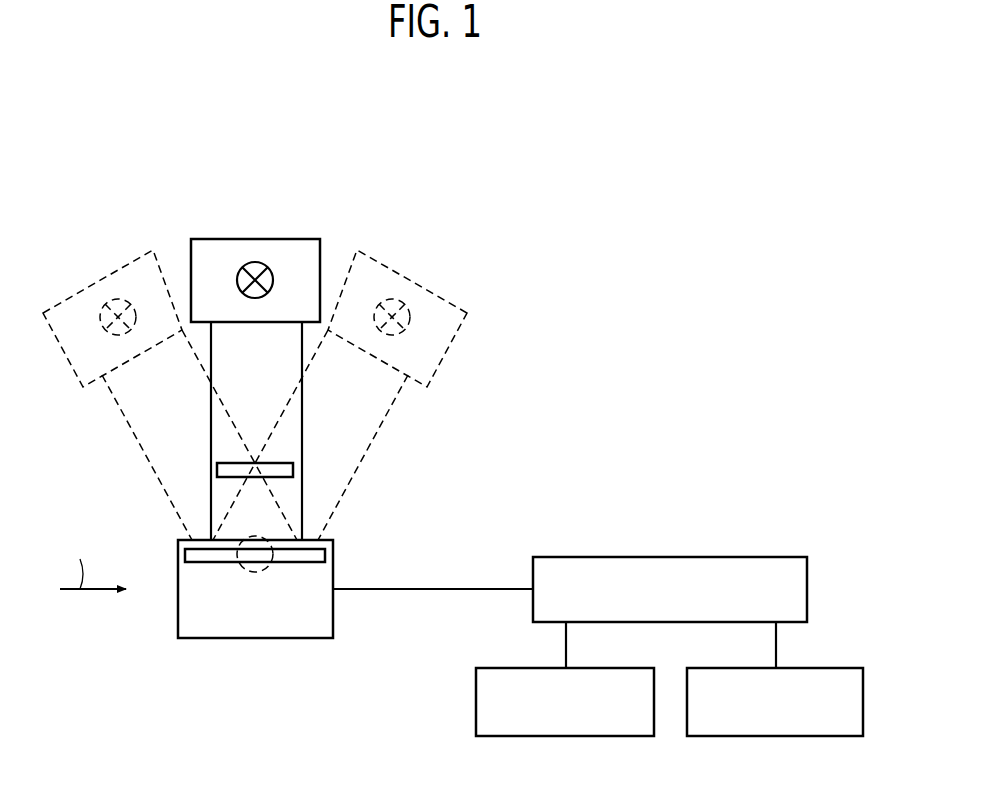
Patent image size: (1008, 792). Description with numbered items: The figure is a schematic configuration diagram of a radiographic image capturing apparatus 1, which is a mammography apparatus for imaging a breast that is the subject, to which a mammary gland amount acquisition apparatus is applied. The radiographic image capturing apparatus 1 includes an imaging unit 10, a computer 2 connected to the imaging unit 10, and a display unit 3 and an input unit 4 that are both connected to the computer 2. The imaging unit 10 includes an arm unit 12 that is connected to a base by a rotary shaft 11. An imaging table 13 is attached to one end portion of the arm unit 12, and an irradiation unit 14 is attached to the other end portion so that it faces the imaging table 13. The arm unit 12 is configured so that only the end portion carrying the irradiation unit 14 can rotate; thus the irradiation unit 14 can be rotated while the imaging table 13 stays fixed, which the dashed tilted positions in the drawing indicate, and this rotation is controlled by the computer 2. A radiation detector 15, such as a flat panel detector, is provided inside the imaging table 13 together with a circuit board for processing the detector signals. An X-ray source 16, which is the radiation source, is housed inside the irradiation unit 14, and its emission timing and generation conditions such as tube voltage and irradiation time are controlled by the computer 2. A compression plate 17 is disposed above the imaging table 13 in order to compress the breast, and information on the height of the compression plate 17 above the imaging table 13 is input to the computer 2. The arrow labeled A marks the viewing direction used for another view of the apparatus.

The radiographic image capturing apparatus 1 is at (440, 128).
The computer 2 is at (758, 556).
The display unit 3 is at (630, 668).
The input unit 4 is at (840, 668).
The imaging unit 10 is at (238, 197).
The rotary shaft 11 is at (252, 574).
The arm unit 12 is at (225, 363).
The imaging table 13 is at (308, 630).
The irradiation unit 14 is at (318, 240).
The radiation detector 15 is at (333, 553).
The X-ray source 16 is at (256, 262).
The compression plate 17 is at (230, 463).